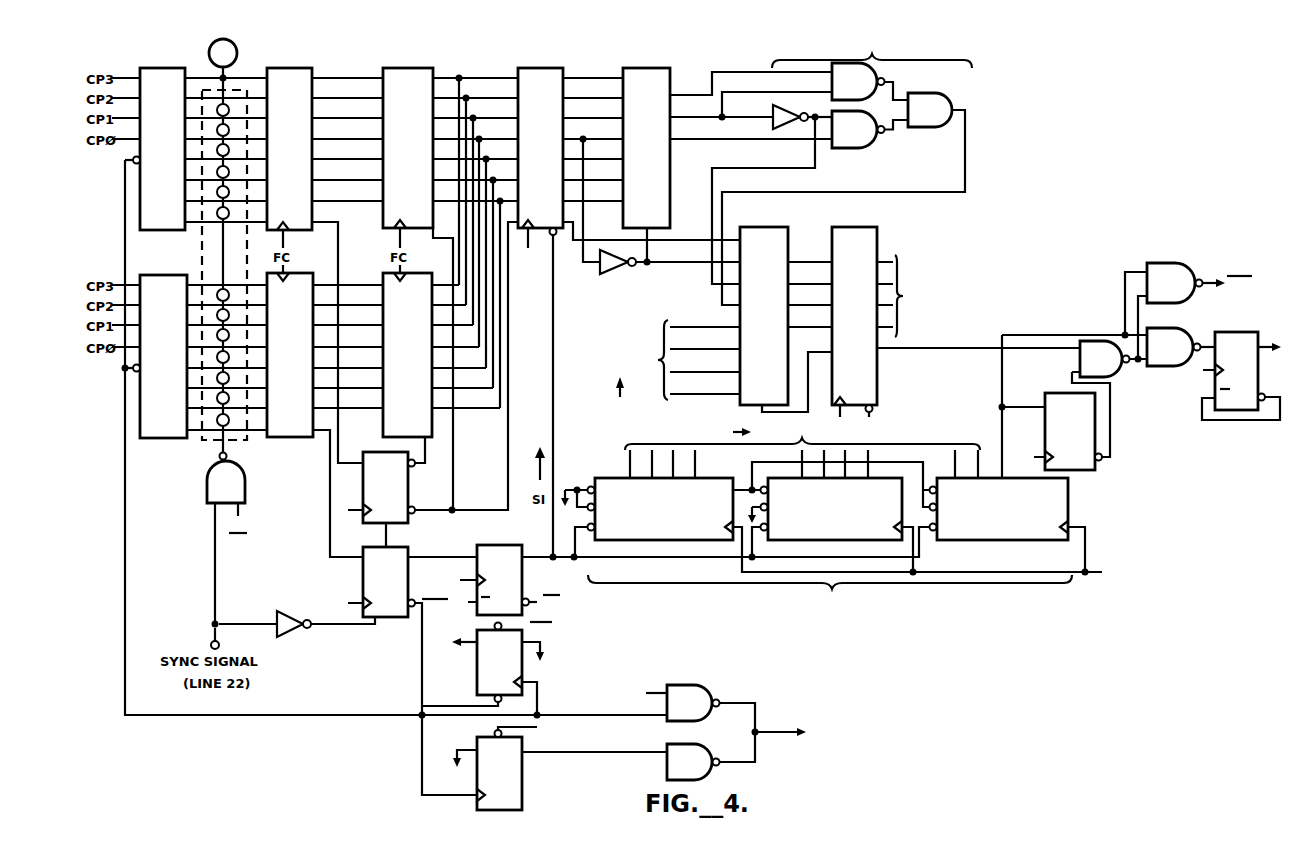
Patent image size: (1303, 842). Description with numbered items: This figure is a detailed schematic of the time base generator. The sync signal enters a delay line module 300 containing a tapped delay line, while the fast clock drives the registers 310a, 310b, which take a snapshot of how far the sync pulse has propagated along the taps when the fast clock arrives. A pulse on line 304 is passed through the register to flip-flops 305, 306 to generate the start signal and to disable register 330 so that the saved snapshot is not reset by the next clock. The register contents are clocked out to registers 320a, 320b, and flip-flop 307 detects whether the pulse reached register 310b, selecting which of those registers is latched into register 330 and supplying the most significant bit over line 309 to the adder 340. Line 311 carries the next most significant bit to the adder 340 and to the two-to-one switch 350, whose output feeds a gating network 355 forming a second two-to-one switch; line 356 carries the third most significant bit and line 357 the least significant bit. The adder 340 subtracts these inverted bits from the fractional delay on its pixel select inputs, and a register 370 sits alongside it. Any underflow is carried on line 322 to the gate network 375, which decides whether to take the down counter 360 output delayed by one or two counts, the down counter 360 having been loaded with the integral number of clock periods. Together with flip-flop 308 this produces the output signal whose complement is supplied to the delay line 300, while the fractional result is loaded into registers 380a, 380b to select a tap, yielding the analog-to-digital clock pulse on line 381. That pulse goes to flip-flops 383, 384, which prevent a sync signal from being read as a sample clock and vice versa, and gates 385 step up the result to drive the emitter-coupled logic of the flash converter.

The register 380b is at (157, 68).
The register 310b is at (291, 68).
The register 320b is at (407, 68).
The register 330 is at (533, 68).
The 2:1 switch 350 is at (642, 68).
The gating network 355 is at (968, 99).
The line 356 is at (713, 168).
The line 357 is at (915, 194).
The adder 340 is at (774, 216).
The register 370 is at (843, 227).
The gate network 375 is at (1138, 264).
The line 322 is at (938, 348).
The flip-flop 308 is at (1213, 388).
The register 380a is at (157, 275).
The register 310a is at (294, 273).
The register 320a is at (407, 273).
The line 304 is at (265, 440).
The delay line module 300 is at (205, 444).
The line 381 is at (125, 462).
The flip-flop 307 is at (368, 452).
The line 309 is at (460, 511).
The flip-flop 305 is at (400, 547).
The flip-flop 306 is at (512, 545).
The line 311 is at (583, 266).
The down counter 360 is at (843, 524).
The flip-flop 383 is at (525, 677).
The flip-flop 384 is at (525, 786).
The gates 385 is at (700, 688).